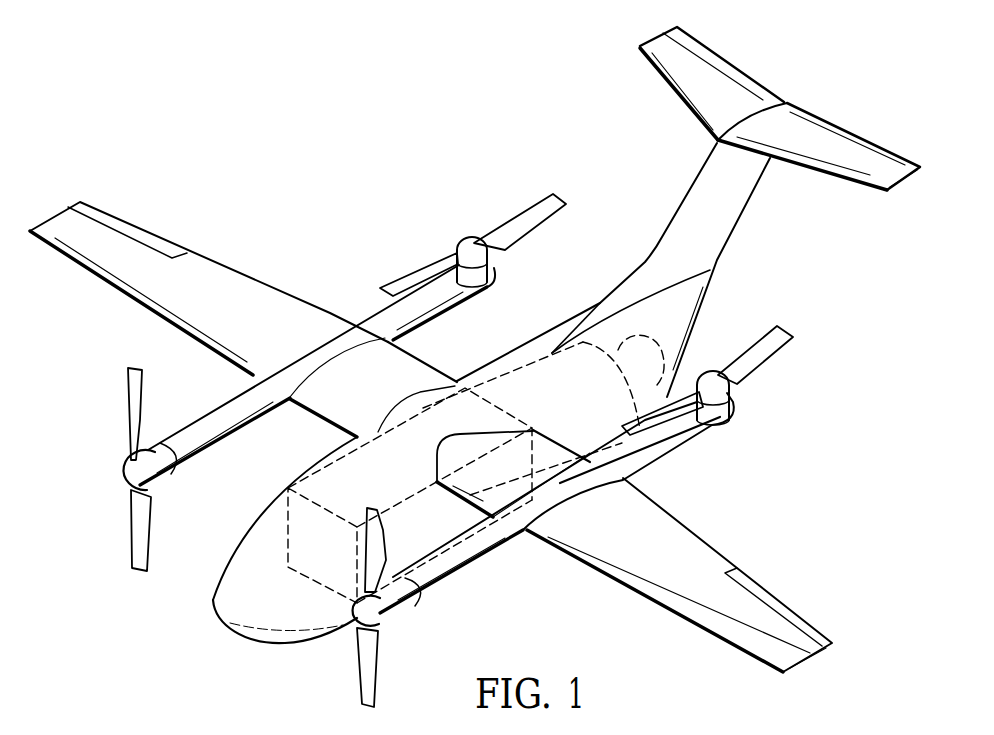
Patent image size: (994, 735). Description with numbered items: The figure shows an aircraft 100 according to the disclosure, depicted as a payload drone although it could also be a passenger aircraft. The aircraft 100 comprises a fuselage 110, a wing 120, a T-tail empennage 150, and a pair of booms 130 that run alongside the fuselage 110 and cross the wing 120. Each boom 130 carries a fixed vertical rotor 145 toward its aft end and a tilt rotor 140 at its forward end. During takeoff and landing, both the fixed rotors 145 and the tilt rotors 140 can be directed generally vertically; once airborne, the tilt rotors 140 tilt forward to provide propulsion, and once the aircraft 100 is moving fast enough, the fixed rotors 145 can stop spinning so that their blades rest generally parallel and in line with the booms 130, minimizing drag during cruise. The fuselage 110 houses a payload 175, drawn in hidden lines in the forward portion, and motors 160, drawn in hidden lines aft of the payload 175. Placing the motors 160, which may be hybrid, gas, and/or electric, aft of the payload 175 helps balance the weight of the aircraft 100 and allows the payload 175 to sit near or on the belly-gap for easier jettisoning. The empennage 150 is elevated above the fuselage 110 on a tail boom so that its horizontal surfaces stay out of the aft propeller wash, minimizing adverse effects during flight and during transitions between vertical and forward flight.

The aircraft 100 is at (311, 125).
The fuselage 110 is at (213, 618).
The wing 120 is at (241, 272).
The booms 130 is at (203, 412).
The tilt rotor 140 is at (132, 526).
The fixed rotor 145 is at (522, 208).
The T-tail empennage 150 is at (843, 124).
The motors 160 is at (517, 372).
The payload 175 is at (287, 533).